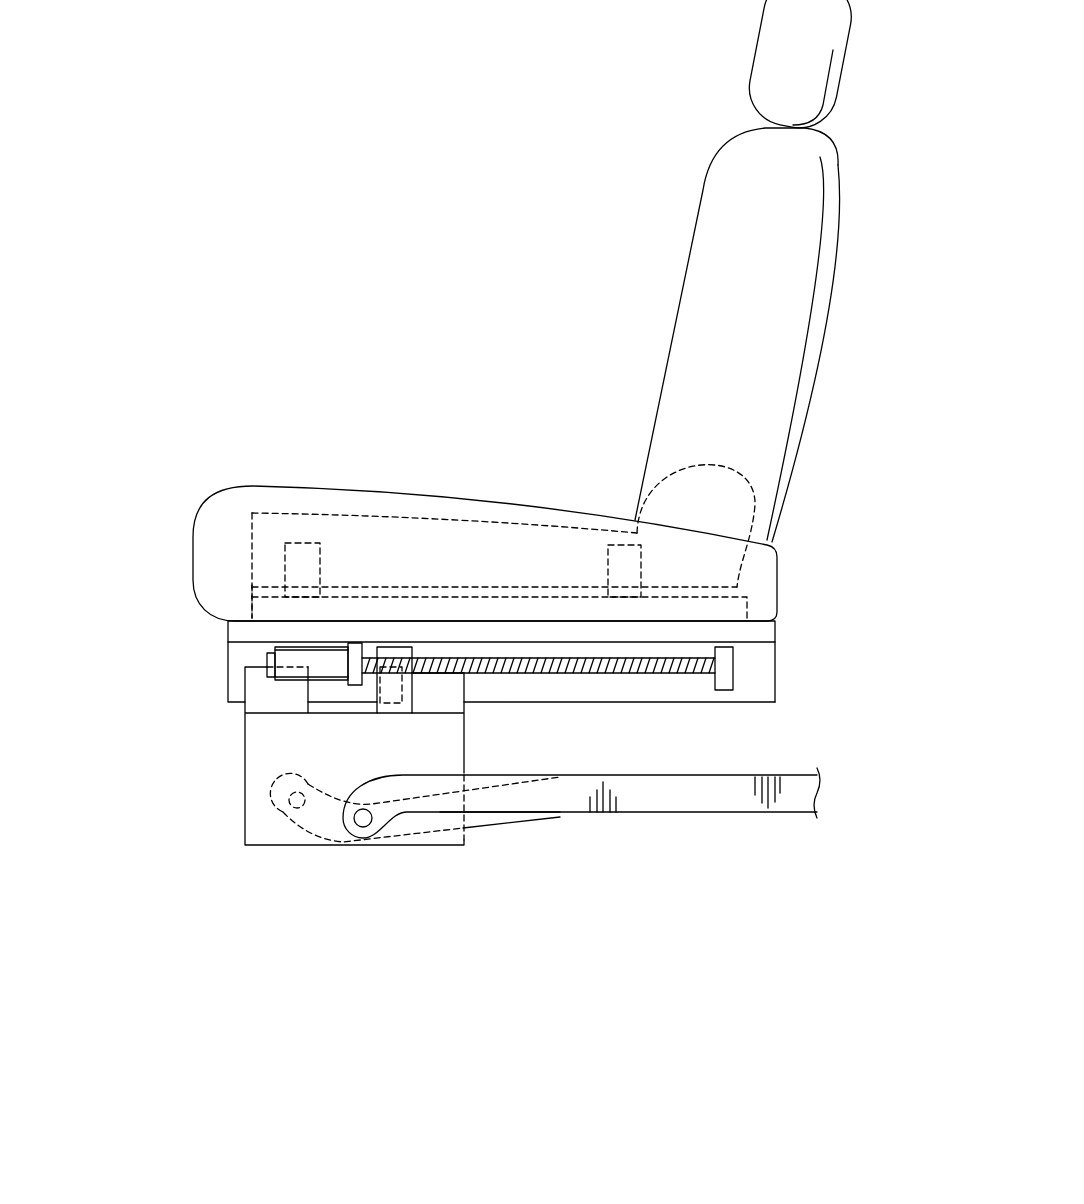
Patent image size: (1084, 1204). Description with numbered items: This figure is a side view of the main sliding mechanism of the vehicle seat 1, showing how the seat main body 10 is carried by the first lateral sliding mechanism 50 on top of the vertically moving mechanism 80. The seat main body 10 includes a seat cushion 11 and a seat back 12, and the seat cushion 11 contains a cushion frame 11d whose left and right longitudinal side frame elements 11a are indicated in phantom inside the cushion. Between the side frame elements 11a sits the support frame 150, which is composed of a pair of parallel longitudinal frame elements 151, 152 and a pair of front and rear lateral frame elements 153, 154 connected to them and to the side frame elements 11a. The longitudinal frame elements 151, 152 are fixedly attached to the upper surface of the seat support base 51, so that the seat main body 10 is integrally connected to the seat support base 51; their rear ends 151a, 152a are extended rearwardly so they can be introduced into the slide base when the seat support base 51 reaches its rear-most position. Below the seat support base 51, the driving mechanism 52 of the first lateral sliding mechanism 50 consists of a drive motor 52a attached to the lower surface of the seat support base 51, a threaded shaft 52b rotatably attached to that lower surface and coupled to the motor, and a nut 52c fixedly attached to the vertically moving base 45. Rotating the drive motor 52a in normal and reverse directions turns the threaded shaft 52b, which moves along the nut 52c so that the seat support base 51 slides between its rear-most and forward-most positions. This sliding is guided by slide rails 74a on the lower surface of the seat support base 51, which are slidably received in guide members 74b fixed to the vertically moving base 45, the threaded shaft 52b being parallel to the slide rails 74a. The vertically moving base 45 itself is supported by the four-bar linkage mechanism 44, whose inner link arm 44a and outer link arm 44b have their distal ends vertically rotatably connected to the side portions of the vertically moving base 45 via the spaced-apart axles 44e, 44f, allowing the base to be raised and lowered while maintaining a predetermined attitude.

The vehicle seat 1 is at (537, 330).
The seat main body 10 is at (367, 482).
The seat cushion 11 is at (280, 485).
The side frame elements 11a is at (447, 540).
The cushion frame 11d is at (251, 536).
The seat back 12 is at (722, 238).
The four-bar linkage mechanism 44 is at (501, 865).
The inner link arm 44a is at (475, 818).
The outer link arm 44b is at (547, 793).
The axle 44e is at (290, 805).
The axle 44f is at (360, 824).
The vertically moving base 45 is at (252, 780).
The first lateral sliding mechanism 50 is at (203, 672).
The seat support base 51 is at (240, 628).
The driving mechanism 52 is at (520, 650).
The drive motor 52a is at (295, 653).
The threaded shaft 52b is at (487, 660).
The nut 52c is at (397, 668).
The slide rails 74a is at (620, 685).
The guide members 74b is at (443, 700).
The vertically moving mechanism 80 is at (540, 827).
The support frame 150 is at (749, 605).
The longitudinal frame element 151 is at (152, 583).
The longitudinal frame element 152 is at (250, 606).
The rear end 151a is at (823, 651).
The rear end 152a is at (697, 613).
The lateral frame element 153 is at (300, 567).
The lateral frame element 154 is at (632, 560).